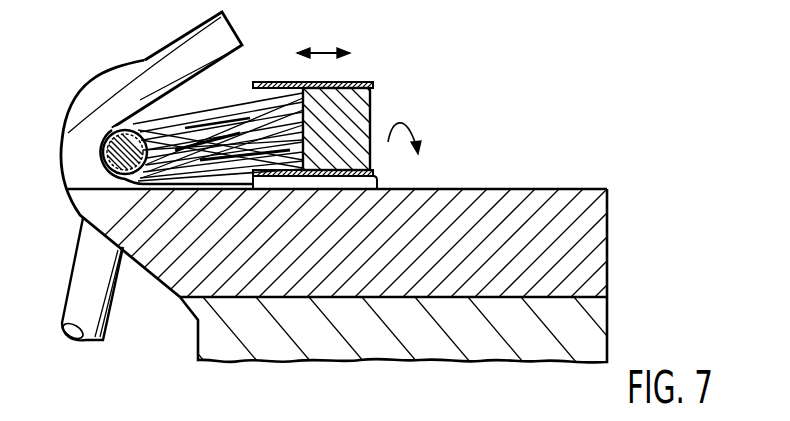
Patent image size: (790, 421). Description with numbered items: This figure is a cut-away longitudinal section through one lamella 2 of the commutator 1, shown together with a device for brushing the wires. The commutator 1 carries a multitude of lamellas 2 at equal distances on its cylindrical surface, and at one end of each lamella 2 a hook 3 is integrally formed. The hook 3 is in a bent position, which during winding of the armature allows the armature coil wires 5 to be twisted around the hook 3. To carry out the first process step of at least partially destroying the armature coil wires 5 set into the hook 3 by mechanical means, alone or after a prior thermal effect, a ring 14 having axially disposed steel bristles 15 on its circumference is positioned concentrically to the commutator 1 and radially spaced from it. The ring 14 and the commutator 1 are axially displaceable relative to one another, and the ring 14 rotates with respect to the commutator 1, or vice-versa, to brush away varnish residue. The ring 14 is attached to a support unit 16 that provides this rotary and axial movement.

The commutator 1 is at (513, 189).
The lamella 2 is at (583, 237).
The hook 3 is at (153, 63).
The armature coil wire 5 is at (100, 151).
The ring 14 is at (350, 118).
The steel bristles 15 is at (230, 98).
The support unit 16 is at (350, 84).